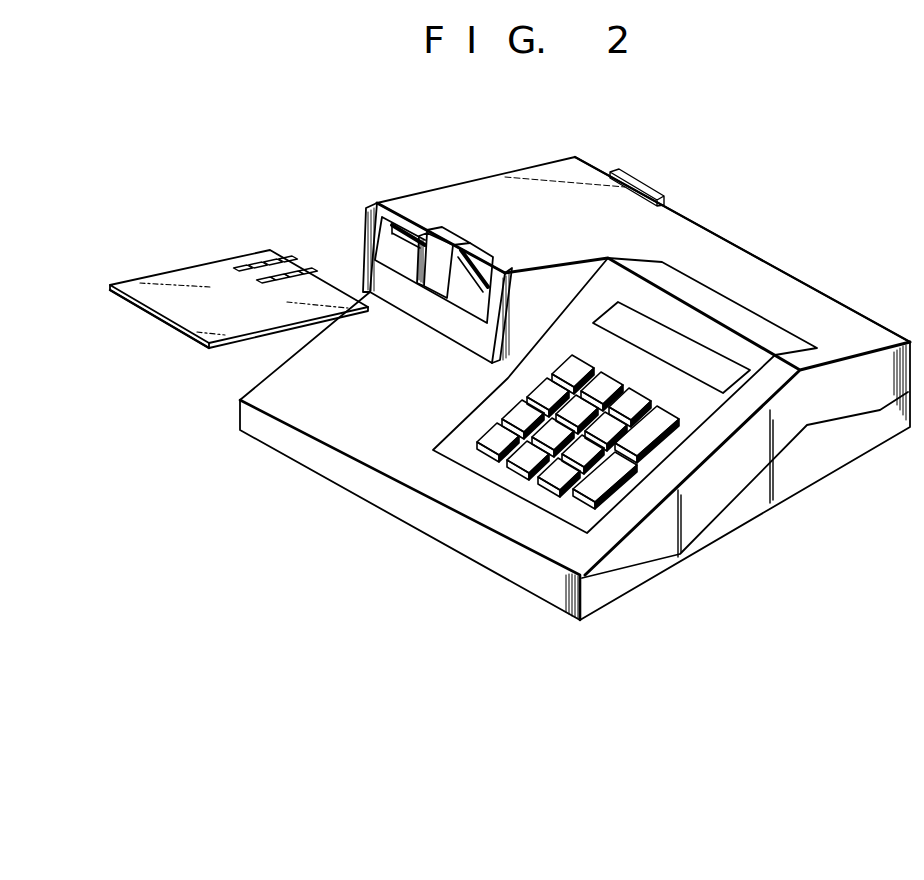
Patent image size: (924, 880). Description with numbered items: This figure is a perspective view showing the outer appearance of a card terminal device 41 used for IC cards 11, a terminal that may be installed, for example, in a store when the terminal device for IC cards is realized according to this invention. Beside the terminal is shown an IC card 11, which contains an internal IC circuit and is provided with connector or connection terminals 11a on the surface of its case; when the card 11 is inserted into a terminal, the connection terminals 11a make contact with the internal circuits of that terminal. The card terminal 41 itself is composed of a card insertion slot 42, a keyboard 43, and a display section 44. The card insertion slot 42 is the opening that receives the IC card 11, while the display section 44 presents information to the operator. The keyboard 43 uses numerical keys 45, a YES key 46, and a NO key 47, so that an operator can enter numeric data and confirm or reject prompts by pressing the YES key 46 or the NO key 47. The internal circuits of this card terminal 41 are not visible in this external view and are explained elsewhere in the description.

The IC card 11 is at (207, 266).
The connection terminals 11a is at (274, 262).
The card terminal device 41 is at (549, 164).
The card insertion slot 42 is at (392, 228).
The keyboard 43 is at (507, 477).
The display section 44 is at (672, 342).
The numerical keys 45 is at (506, 412).
The YES key 46 is at (587, 494).
The NO key 47 is at (668, 417).